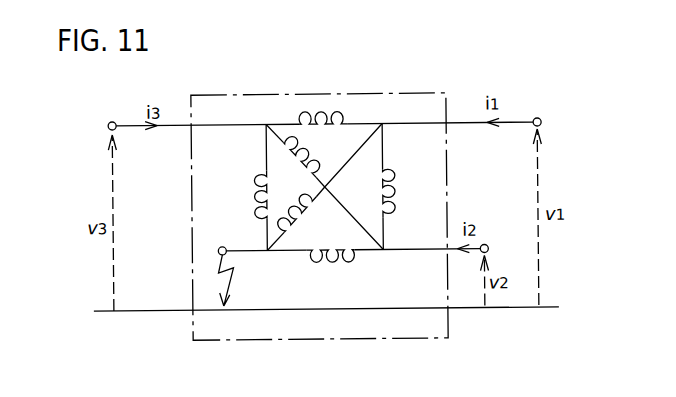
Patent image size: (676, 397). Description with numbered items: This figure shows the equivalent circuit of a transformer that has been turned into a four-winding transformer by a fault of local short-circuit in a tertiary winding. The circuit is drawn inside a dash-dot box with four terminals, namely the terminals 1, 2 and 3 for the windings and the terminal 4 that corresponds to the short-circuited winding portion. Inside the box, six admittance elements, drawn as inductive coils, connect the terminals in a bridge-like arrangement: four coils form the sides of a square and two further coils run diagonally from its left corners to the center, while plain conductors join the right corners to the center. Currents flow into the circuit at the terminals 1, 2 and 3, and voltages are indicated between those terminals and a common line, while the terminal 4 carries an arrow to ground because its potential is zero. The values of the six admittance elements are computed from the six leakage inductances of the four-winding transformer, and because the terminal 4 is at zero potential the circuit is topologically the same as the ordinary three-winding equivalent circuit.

The terminal 1 is at (549, 103).
The terminal 2 is at (501, 235).
The terminal 3 is at (103, 110).
The terminal 4 is at (221, 233).